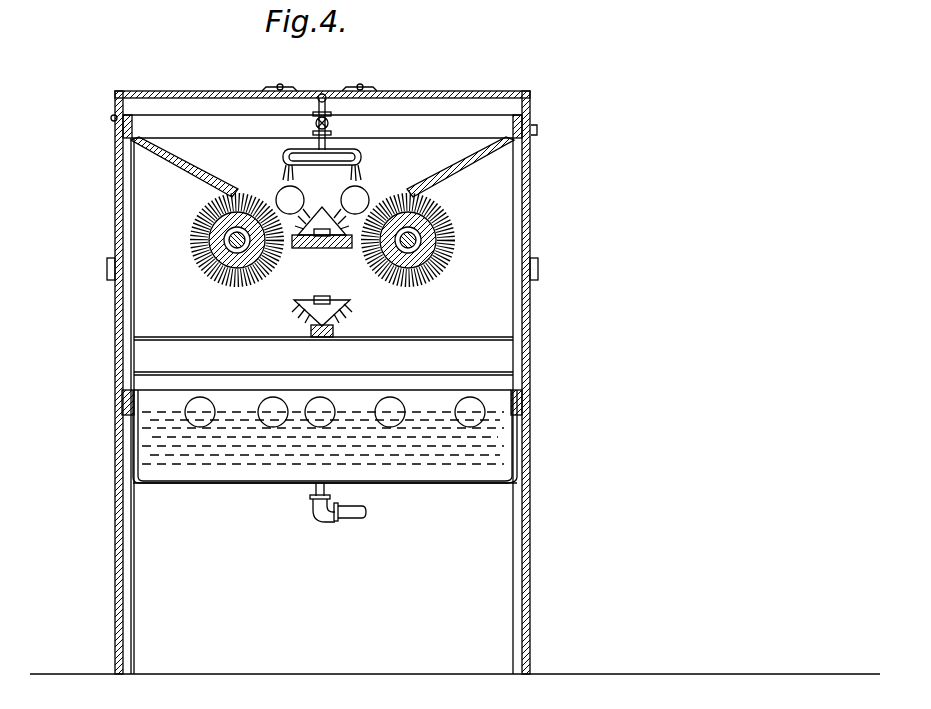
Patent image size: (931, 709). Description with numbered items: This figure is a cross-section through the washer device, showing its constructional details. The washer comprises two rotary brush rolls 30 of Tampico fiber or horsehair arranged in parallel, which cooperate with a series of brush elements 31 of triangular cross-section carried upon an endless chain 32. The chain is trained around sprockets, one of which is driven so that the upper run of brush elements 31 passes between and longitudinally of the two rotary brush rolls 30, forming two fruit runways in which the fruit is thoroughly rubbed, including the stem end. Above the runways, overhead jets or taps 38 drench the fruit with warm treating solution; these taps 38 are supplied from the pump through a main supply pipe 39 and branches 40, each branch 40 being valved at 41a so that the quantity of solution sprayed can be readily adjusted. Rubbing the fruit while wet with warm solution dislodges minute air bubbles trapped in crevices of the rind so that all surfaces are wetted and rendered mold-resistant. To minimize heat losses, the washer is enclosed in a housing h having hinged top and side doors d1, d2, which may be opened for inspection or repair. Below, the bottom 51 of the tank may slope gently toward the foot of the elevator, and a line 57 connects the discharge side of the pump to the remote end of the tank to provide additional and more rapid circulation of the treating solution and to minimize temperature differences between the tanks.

The hinged top door d1 is at (176, 92).
The hinged side door d2 is at (115, 222).
The housing h is at (133, 478).
The bottom of the tank 51 is at (220, 483).
The line 57 is at (355, 514).
The main supply pipe 39 is at (320, 97).
The branches 40 is at (316, 142).
The valve 41a is at (332, 124).
The taps 38 is at (340, 176).
The rotary brush rolls 30 is at (215, 268).
The brush elements 31 is at (307, 300).
The endless chain 32 is at (330, 298).